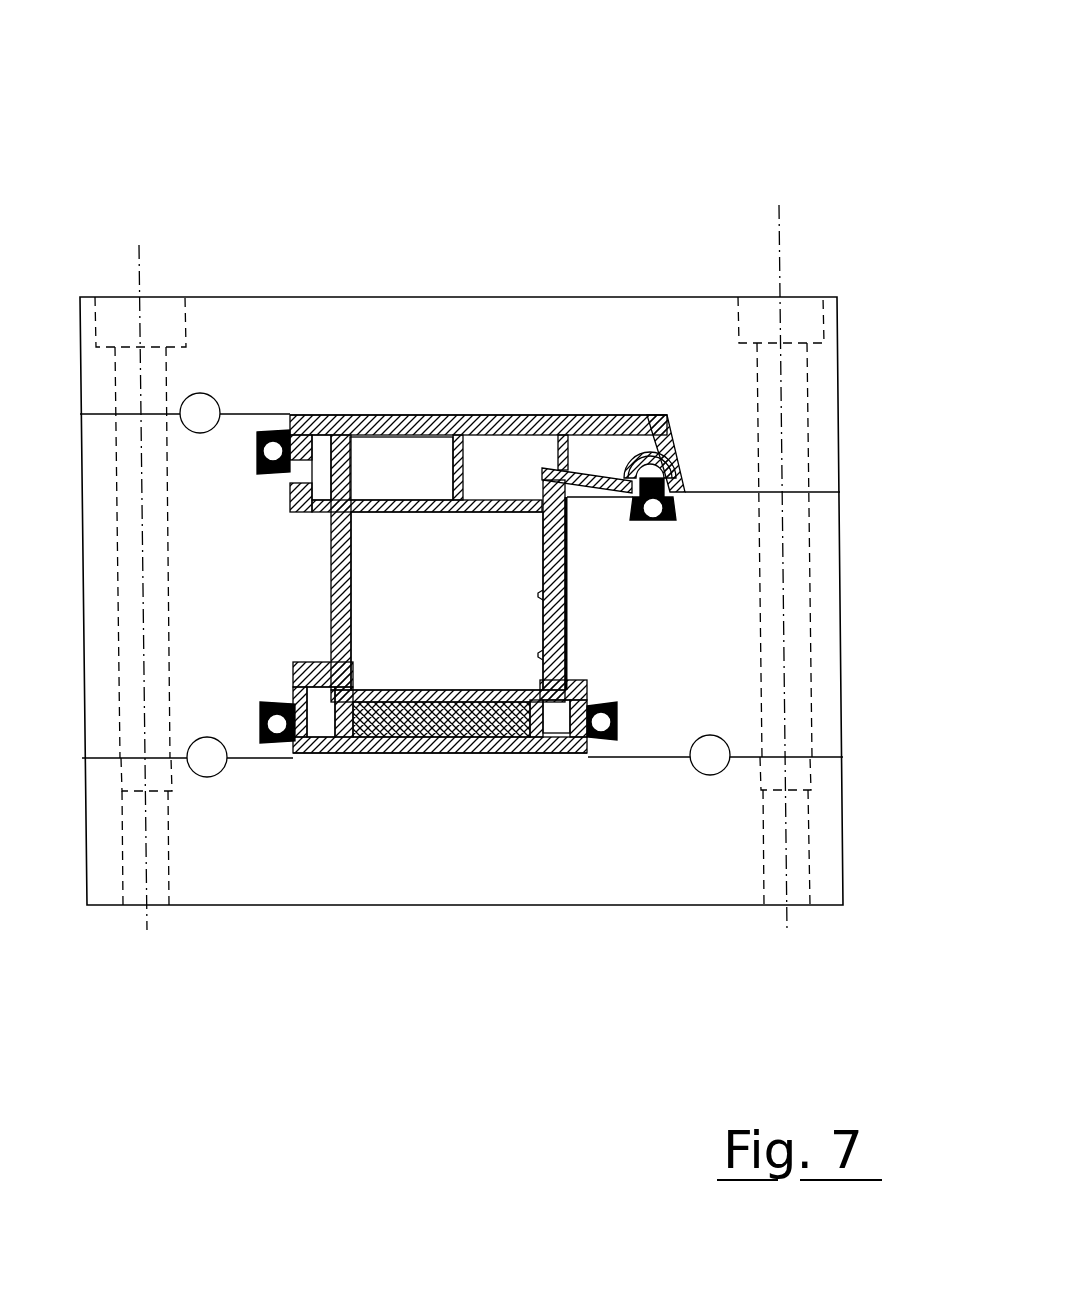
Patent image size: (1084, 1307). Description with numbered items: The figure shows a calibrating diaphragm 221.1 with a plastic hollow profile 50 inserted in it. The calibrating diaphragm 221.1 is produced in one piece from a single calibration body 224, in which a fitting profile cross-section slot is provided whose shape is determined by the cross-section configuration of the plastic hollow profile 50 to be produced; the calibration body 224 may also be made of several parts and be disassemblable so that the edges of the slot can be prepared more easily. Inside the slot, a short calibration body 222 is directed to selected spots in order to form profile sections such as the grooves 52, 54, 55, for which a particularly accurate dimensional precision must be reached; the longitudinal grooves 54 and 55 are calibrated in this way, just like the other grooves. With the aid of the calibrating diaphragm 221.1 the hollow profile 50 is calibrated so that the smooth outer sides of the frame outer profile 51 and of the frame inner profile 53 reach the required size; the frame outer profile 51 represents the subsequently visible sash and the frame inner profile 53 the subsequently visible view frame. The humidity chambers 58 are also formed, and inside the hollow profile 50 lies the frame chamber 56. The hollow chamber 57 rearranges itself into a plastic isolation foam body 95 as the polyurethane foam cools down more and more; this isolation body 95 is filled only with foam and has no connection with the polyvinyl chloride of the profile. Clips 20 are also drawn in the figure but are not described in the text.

The calibrating diaphragm 221.1 is at (678, 90).
The short calibration body 222 is at (269, 436).
The humidity chamber 58 is at (408, 463).
The frame outer profile 51 is at (470, 413).
The groove 52 is at (682, 463).
The longitudinal groove 54 is at (298, 467).
The frame chamber 56 is at (447, 601).
The plastic isolation foam body 95 is at (453, 683).
The longitudinal groove 55 is at (587, 687).
The clip 20 is at (272, 760).
The frame inner profile 53 is at (417, 760).
The hollow chamber 57 is at (450, 760).
The plastic hollow profile 50 is at (500, 760).
The calibration body 224 is at (690, 858).